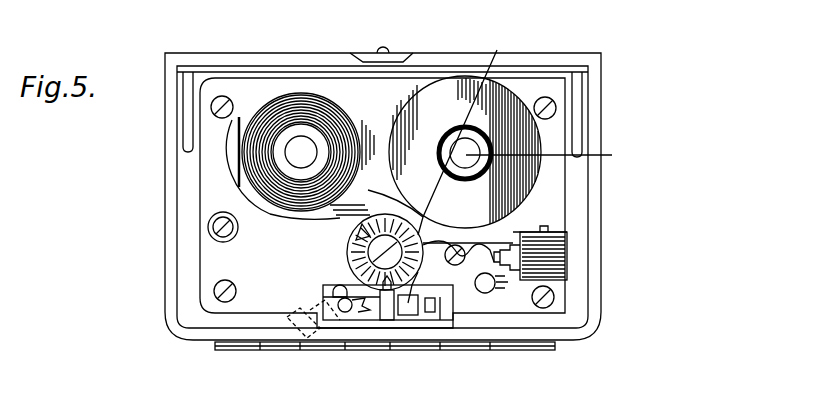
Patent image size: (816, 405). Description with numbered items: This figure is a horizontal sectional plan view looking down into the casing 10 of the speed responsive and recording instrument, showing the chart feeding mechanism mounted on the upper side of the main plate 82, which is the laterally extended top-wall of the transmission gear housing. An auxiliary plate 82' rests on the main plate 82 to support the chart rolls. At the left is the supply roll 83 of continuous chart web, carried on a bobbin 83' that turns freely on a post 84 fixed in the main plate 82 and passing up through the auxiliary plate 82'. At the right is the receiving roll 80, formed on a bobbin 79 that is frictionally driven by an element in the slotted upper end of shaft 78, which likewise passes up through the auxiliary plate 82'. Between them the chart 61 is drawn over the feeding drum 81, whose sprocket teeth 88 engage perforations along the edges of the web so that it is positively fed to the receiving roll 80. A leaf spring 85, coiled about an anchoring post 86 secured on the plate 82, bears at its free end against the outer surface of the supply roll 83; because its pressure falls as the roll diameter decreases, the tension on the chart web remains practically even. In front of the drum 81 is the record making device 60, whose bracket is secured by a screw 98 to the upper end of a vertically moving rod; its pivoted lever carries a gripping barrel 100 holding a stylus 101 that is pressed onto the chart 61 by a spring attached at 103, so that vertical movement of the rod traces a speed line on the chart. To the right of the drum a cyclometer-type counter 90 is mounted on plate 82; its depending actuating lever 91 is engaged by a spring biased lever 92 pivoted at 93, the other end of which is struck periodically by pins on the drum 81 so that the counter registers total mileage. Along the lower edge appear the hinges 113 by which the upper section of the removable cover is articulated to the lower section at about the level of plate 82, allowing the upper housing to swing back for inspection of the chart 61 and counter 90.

The casing 10 is at (600, 210).
The record making device 60 is at (373, 313).
The chart 61 is at (425, 209).
The shaft 78 is at (551, 165).
The bobbin 79 is at (469, 128).
The receiving roll 80 is at (446, 130).
The feeding drum 81 is at (368, 258).
The main plate 82 is at (256, 335).
The auxiliary plate 82' is at (484, 130).
The supply roll 83 is at (314, 152).
The bobbin 83' is at (306, 213).
The post 84 is at (301, 150).
The leaf spring 85 is at (240, 185).
The anchoring post 86 is at (208, 231).
The sprocket teeth 88 is at (358, 252).
The counter 90 is at (548, 253).
The actuating lever 91 is at (505, 270).
The spring biased lever 92 is at (470, 266).
The pivot 93 is at (453, 266).
The screw 98 is at (403, 307).
The gripping barrel 100 is at (387, 313).
The stylus 101 is at (360, 313).
The spring attachment point 103 is at (330, 300).
The hinges 113 is at (242, 347).